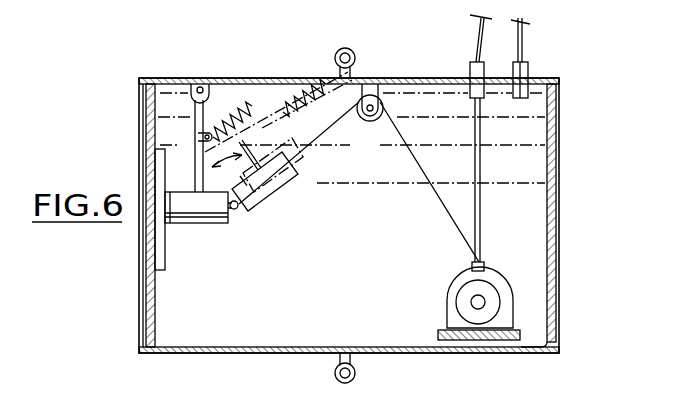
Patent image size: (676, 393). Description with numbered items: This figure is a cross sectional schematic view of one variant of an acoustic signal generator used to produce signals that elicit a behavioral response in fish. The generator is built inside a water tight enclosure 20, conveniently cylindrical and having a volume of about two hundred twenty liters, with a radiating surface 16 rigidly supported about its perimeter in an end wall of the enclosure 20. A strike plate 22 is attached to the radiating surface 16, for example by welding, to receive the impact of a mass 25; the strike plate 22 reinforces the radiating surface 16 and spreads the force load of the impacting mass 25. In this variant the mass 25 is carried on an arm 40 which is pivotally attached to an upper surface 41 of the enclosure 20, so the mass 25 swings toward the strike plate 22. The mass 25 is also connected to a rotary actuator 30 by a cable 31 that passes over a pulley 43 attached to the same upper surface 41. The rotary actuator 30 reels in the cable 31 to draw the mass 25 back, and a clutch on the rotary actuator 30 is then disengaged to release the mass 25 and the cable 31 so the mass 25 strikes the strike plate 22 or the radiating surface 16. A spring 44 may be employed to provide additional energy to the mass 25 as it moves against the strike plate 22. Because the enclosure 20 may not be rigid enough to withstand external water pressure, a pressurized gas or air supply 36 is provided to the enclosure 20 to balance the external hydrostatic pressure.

The enclosure 20 is at (560, 186).
The radiating surface 16 is at (140, 297).
The strike plate 22 is at (164, 269).
The mass 25 is at (218, 223).
The rotary actuator 30 is at (446, 317).
The cable 31 is at (446, 213).
The pressurized gas or air supply 36 is at (530, 84).
The arm 40 is at (195, 106).
The upper surface 41 is at (238, 80).
The pulley 43 is at (371, 121).
The spring 44 is at (243, 112).